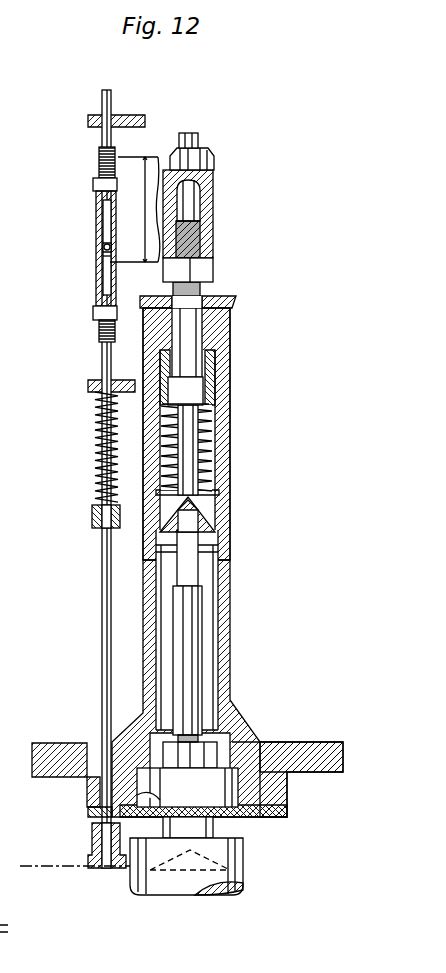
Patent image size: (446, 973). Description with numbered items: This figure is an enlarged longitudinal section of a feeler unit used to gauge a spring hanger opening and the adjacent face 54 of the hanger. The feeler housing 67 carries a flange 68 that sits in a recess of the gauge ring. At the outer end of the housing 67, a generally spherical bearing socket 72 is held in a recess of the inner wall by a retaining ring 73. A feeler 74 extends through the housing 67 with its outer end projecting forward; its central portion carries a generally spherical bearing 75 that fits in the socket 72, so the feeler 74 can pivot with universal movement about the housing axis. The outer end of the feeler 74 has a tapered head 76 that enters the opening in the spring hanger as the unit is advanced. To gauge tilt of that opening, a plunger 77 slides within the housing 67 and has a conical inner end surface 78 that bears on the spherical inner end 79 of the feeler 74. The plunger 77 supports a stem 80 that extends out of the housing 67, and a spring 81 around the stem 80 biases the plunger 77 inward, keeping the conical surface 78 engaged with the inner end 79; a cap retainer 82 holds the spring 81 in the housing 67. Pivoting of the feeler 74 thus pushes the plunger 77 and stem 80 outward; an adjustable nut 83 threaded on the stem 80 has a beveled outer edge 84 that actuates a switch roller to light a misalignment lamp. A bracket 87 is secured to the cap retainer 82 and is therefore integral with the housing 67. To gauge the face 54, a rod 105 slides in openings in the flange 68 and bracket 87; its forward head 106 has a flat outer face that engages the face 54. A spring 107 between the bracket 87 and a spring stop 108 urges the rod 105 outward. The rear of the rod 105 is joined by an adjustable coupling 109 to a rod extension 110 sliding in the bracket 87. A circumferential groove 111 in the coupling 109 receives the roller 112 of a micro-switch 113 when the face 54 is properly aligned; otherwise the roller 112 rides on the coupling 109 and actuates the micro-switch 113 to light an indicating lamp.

The face 54 is at (86, 866).
The feeler housing 67 is at (230, 672).
The flange 68 is at (315, 774).
The bearing socket 72 is at (252, 815).
The retaining ring 73 is at (287, 812).
The feeler 74 is at (180, 680).
The spherical bearing 75 is at (220, 808).
The head 76 is at (243, 865).
The plunger 77 is at (215, 518).
The conical inner end surface 78 is at (218, 548).
The spherical inner end 79 is at (160, 500).
The stem 80 is at (205, 297).
The spring 81 is at (210, 440).
The cap retainer 82 is at (230, 331).
The adjustable nut 83 is at (205, 186).
The beveled outer edge 84 is at (200, 150).
The bracket 87 is at (236, 304).
The rod 105 is at (102, 690).
The head 106 is at (92, 842).
The spring 107 is at (95, 470).
The spring stop 108 is at (92, 516).
The adjustable coupling 109 is at (96, 283).
The rod extension 110 is at (99, 157).
The circumferential groove 111 is at (100, 257).
The roller 112 is at (100, 246).
The micro-switch 113 is at (145, 160).